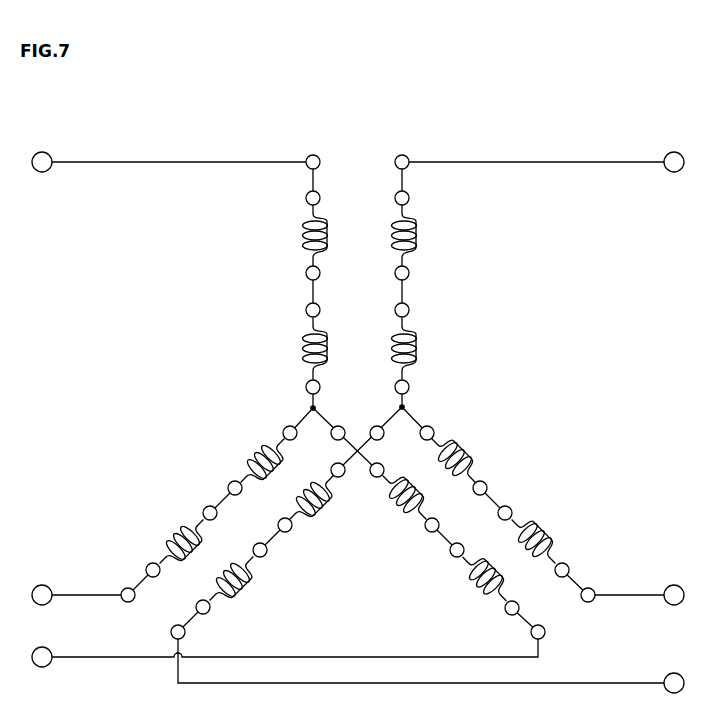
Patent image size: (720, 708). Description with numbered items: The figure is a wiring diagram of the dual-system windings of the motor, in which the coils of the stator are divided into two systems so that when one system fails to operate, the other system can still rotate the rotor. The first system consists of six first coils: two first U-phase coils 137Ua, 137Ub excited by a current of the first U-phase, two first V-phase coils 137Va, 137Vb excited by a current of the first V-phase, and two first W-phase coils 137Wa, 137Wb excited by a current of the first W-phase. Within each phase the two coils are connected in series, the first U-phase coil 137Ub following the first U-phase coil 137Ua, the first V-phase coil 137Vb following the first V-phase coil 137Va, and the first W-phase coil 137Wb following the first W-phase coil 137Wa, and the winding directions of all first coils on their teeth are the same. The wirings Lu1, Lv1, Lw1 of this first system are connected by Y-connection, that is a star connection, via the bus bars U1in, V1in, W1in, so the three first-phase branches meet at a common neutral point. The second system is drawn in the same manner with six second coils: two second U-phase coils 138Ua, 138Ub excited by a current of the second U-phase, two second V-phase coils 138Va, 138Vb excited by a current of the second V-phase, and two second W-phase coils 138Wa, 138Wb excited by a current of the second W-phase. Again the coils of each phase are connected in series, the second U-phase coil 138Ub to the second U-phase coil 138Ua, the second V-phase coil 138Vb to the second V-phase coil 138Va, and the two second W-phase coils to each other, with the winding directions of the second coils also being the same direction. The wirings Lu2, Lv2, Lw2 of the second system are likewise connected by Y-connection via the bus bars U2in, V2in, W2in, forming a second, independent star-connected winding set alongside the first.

The first U-phase coil 137Ua is at (304, 244).
The first U-phase coil 137Ub is at (304, 356).
The first V-phase coil 137Va is at (168, 535).
The first V-phase coil 137Vb is at (250, 454).
The first W-phase coil 137Wa is at (481, 596).
The first W-phase coil 137Wb is at (395, 516).
The second U-phase coil 138Ua is at (418, 243).
The second U-phase coil 138Ub is at (418, 355).
The second V-phase coil 138Va is at (234, 596).
The second V-phase coil 138Vb is at (321, 516).
The second W-phase coil 138Wa is at (543, 535).
The second W-phase coil 138Wb is at (464, 454).
The wiring Lu1 is at (178, 164).
The wiring Lu2 is at (537, 164).
The wiring Lv1 is at (77, 600).
The wiring Lv2 is at (577, 682).
The wiring Lw1 is at (139, 654).
The wiring Lw2 is at (637, 600).
The bus bar U1in is at (307, 167).
The bus bar U2in is at (406, 168).
The bus bar V1in is at (121, 586).
The bus bar V2in is at (173, 625).
The bus bar W1in is at (543, 625).
The bus bar W2in is at (594, 586).